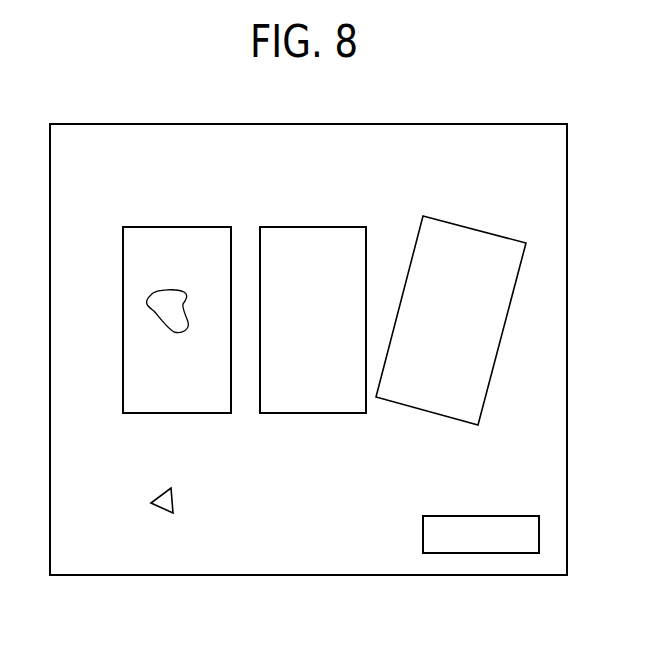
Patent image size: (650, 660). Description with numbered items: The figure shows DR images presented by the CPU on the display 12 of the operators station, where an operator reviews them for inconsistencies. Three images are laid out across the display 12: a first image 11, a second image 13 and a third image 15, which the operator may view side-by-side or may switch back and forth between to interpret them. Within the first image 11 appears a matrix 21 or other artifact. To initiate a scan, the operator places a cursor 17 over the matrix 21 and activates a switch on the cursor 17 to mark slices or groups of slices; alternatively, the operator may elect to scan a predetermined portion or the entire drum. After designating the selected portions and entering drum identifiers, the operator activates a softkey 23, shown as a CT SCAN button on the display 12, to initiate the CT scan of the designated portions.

The display 12 is at (337, 600).
The first image 11 is at (196, 233).
The matrix 21 is at (176, 350).
The second image 13 is at (318, 233).
The third image 15 is at (440, 237).
The cursor 17 is at (170, 502).
The softkey 23 is at (422, 540).